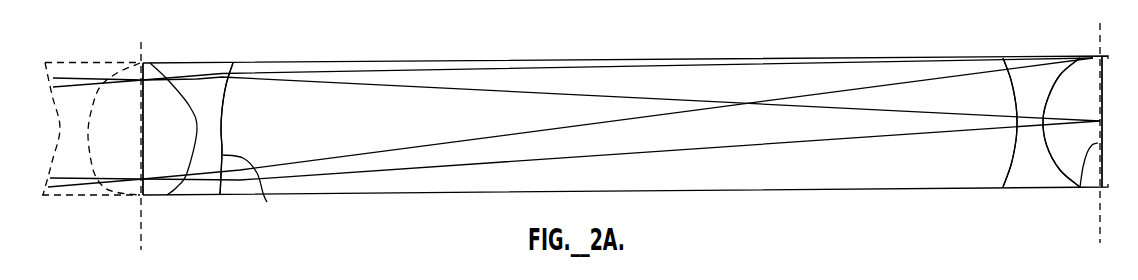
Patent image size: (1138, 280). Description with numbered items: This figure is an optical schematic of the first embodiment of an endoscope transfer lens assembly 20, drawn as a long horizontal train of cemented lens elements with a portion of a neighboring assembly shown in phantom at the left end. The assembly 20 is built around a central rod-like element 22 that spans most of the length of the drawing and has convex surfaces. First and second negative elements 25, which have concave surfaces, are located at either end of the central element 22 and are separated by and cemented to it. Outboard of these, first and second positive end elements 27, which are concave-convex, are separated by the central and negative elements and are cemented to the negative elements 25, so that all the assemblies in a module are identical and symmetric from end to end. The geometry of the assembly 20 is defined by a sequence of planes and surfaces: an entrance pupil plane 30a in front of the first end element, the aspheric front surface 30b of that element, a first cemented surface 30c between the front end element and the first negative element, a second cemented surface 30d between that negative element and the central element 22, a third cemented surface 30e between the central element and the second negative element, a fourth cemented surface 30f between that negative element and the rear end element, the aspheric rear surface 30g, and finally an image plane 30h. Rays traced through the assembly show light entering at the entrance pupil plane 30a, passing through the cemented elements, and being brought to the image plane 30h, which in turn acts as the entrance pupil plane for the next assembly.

The assembly 20 is at (380, 63).
The central rod-like element 22 is at (573, 80).
The negative elements 25 is at (212, 95).
The positive end elements 27 is at (165, 93).
The entrance pupil plane 30a is at (141, 236).
The front surface 30b is at (143, 153).
The first cemented surface 30c is at (220, 195).
The second cemented surface 30d is at (302, 227).
The third cemented surface 30e is at (1003, 177).
The fourth cemented surface 30f is at (1058, 167).
The rear surface 30g is at (1082, 188).
The image plane 30h is at (1100, 227).